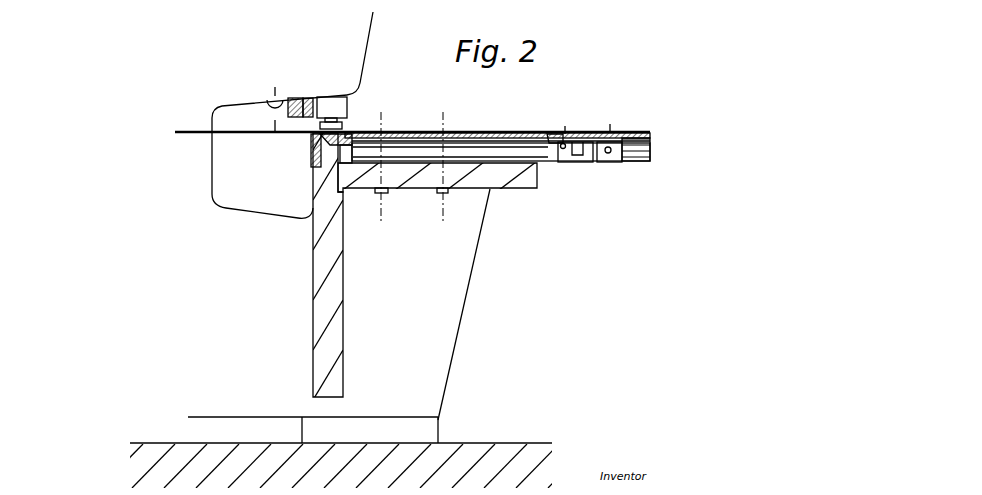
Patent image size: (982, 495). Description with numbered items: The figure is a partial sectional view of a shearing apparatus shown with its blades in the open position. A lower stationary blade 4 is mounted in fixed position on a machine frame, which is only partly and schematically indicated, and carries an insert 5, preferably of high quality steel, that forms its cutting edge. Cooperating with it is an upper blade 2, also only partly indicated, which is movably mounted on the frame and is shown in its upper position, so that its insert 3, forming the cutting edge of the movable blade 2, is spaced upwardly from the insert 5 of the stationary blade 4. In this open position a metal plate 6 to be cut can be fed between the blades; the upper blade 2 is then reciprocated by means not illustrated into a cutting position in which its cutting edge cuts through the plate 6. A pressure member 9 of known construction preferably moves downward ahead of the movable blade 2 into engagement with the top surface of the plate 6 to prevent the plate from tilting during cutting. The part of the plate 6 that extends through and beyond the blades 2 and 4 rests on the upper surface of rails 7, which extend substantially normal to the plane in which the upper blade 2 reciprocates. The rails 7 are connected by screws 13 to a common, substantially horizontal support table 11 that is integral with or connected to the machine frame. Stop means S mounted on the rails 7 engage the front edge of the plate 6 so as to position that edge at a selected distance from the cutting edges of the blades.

The upper blade 2 is at (292, 98).
The insert 3 is at (310, 98).
The lower stationary blade 4 is at (320, 229).
The insert 5 is at (310, 163).
The metal plate 6 is at (493, 130).
The rails 7 is at (515, 155).
The pressure member 9 is at (338, 108).
The support table 11 is at (424, 178).
The screws 13 is at (447, 192).
The stop means S is at (597, 120).